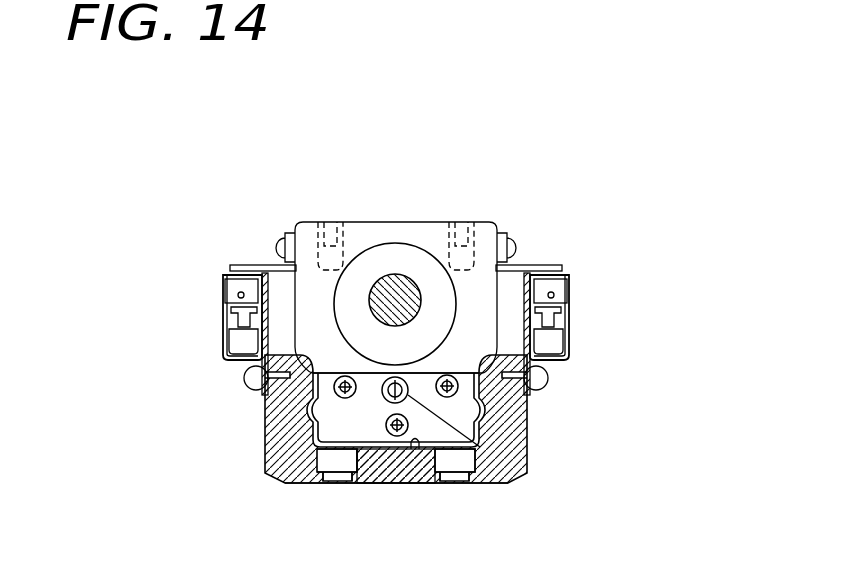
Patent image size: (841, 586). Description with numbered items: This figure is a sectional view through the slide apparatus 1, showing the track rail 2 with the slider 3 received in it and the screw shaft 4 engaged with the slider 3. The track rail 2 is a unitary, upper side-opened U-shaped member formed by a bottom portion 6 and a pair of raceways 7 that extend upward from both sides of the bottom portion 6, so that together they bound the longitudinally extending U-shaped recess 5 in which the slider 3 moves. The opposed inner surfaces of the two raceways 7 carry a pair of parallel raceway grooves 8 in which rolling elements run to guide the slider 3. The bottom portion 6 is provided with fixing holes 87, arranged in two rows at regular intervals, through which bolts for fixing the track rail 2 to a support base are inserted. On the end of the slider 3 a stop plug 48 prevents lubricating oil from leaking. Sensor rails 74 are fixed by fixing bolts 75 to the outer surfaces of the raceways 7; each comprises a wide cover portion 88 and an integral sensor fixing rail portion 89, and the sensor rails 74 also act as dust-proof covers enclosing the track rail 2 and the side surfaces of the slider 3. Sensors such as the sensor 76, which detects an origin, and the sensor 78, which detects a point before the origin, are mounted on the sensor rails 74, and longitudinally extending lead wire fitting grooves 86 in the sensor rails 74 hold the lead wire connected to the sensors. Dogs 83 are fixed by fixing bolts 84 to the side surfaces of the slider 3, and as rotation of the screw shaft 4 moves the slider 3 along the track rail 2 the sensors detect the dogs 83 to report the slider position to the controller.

The slide apparatus 1 is at (453, 202).
The track rail 2 is at (272, 484).
The slider 3 is at (433, 233).
The screw shaft 4 is at (389, 283).
The U-shaped recess 5 is at (414, 450).
The bottom portion 6 is at (385, 485).
The raceways 7 is at (283, 406).
The raceway grooves 8 is at (306, 411).
The stop plug 48 is at (480, 447).
The sensor rails 74 is at (240, 362).
The fixing bolts 75 is at (250, 382).
The sensor 76 is at (563, 287).
The sensor 78 is at (228, 291).
The dogs 83 is at (253, 265).
The fixing bolts 84 is at (277, 265).
The lead wire fitting grooves 86 is at (241, 338).
The fixing holes 87 is at (337, 470).
The wide cover portions 88 is at (268, 276).
The sensor fixing rail portions 89 is at (230, 320).